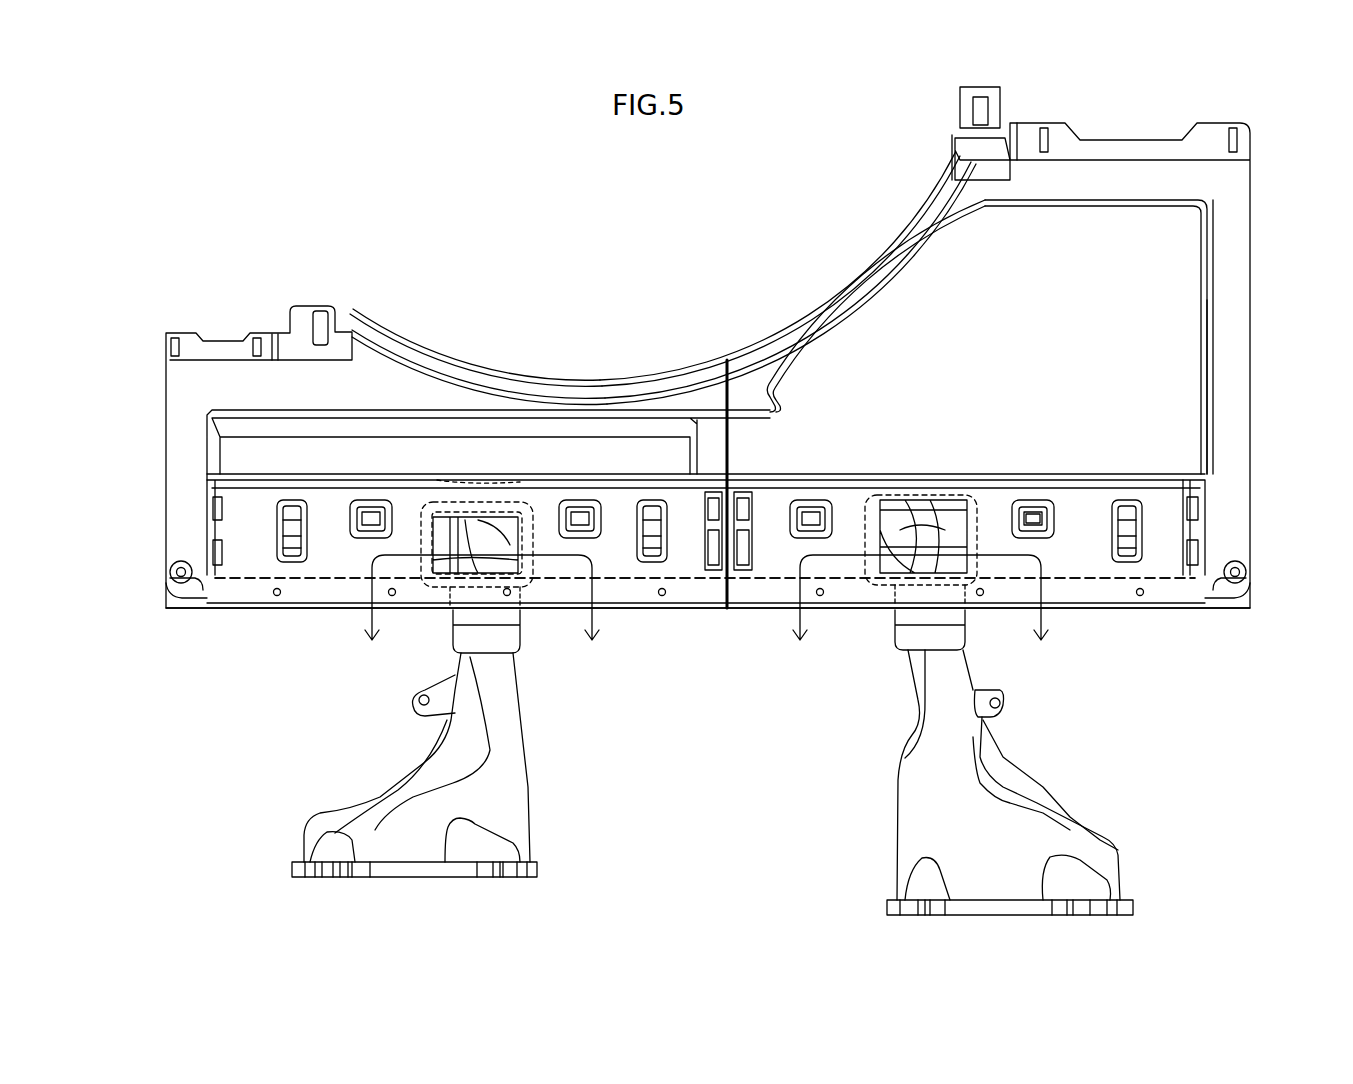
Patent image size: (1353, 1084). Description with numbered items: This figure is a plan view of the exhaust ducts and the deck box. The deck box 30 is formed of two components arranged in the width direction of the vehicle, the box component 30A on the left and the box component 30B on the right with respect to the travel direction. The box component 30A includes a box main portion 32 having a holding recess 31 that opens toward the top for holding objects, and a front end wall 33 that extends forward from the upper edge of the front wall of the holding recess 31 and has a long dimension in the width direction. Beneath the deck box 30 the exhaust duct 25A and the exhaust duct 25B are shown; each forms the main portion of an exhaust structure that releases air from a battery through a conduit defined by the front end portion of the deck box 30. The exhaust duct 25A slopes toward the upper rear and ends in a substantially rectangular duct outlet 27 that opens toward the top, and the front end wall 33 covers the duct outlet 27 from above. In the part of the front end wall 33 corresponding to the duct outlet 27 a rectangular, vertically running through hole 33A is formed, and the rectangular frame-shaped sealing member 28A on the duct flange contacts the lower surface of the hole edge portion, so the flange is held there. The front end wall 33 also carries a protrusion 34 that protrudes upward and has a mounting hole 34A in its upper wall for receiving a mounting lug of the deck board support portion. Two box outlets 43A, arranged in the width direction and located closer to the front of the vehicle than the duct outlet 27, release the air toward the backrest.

The deck box 30 is at (168, 291).
The box component 30A is at (817, 302).
The box component 30B is at (592, 334).
The box main portion 32 is at (1160, 252).
The holding recess 31 is at (1200, 360).
The front end wall 33 is at (1165, 563).
The through hole 33A is at (512, 545).
The protrusion 34 is at (374, 500).
The mounting hole 34A is at (1030, 520).
The sealing member 28A is at (440, 492).
The duct outlet 27 is at (925, 543).
The box outlet 43A is at (304, 594).
The exhaust duct 25A is at (955, 773).
The exhaust duct 25B is at (507, 810).